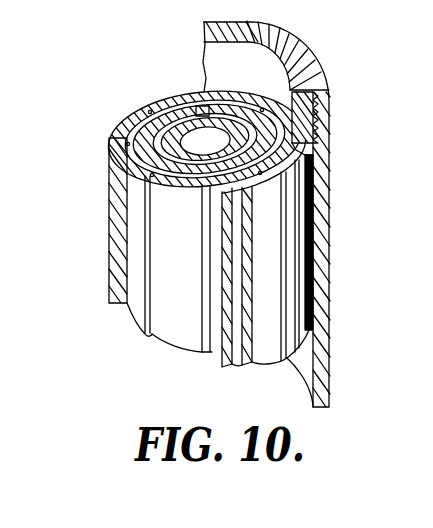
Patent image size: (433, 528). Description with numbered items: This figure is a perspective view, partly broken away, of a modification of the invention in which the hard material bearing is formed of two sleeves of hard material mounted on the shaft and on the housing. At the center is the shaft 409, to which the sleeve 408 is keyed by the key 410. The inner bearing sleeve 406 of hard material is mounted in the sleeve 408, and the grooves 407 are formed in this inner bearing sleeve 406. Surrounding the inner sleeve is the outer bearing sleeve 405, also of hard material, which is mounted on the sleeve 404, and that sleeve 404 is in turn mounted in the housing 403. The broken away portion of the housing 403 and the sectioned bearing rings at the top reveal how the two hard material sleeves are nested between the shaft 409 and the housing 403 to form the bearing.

The housing 403 is at (323, 192).
The sleeve 404 is at (302, 155).
The bearing sleeve 405 is at (119, 158).
The inner bearing sleeve 406 is at (141, 168).
The grooves 407 is at (145, 336).
The sleeve 408 is at (150, 139).
The shaft 409 is at (170, 130).
The key 410 is at (203, 118).